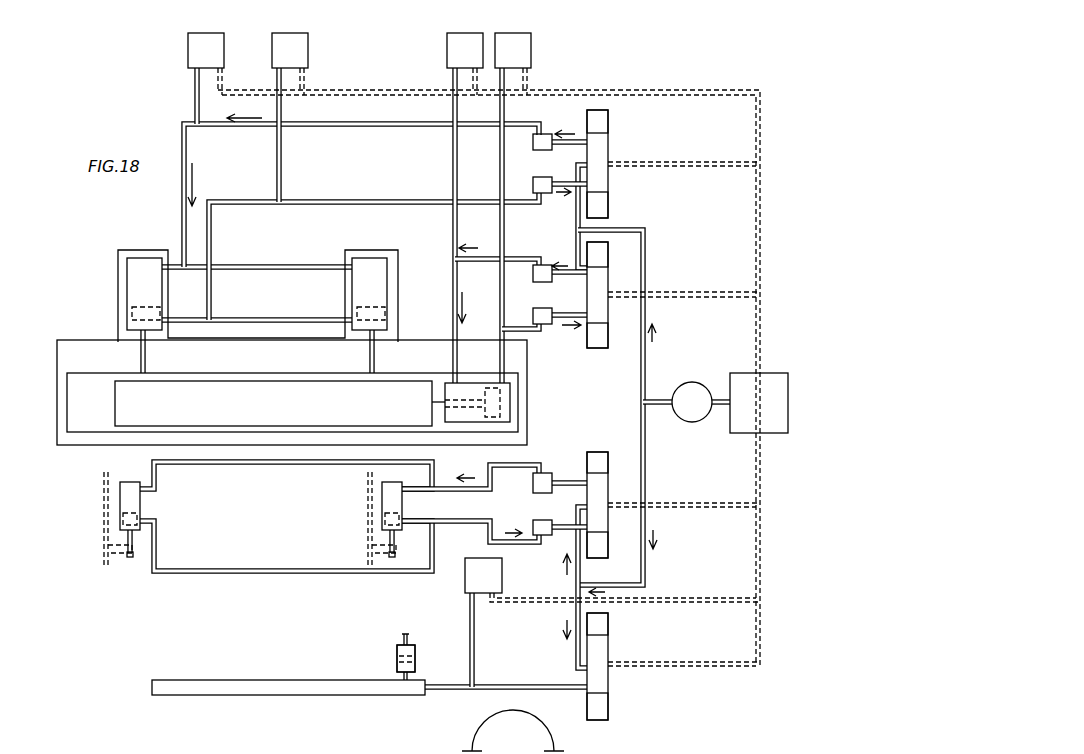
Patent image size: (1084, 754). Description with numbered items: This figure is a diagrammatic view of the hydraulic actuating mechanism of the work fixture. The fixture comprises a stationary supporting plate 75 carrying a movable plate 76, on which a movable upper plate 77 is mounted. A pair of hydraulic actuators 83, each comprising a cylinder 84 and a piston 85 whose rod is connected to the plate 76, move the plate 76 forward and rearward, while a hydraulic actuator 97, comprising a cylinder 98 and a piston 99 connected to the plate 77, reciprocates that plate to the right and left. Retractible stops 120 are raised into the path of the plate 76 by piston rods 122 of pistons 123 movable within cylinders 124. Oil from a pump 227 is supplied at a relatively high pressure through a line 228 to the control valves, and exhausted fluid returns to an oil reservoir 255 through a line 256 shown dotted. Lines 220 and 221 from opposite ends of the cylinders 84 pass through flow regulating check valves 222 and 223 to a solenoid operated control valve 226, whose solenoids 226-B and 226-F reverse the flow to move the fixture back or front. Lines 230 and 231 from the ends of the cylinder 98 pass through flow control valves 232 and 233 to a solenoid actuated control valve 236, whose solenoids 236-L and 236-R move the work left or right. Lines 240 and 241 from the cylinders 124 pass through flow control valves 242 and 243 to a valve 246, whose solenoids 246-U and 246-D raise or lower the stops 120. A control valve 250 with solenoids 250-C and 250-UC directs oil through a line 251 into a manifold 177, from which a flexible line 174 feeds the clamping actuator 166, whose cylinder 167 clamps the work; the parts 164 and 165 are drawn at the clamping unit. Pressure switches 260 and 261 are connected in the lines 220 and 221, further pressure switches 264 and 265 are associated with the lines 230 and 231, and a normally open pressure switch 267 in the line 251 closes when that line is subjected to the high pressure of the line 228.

The supporting plate 75 is at (60, 345).
The movable plate 76 is at (74, 410).
The movable upper plate 77 is at (232, 384).
The hydraulic actuator 83 is at (139, 250).
The cylinder 84 is at (132, 284).
The piston 85 is at (128, 320).
The hydraulic actuator 97 is at (516, 389).
The cylinder 98 is at (512, 423).
The piston 99 is at (500, 410).
The retractible stop 120 is at (104, 480).
The piston rod 122 is at (130, 543).
The piston 123 is at (124, 517).
The cylinder 124 is at (118, 500).
The upper stem 164 is at (414, 632).
The switch contact 165 is at (397, 660).
The hydraulic actuator 166 is at (422, 656).
The cylinder 167 is at (397, 652).
The flexible line 174 is at (404, 676).
The manifold 177 is at (305, 690).
The line 220 is at (393, 127).
The line 221 is at (380, 200).
The flow regulating check valve 222 is at (545, 133).
The flow regulating check valve 223 is at (545, 194).
The solenoid operated control valve 226 is at (608, 150).
The solenoid 226-B is at (608, 124).
The solenoid 226-F is at (608, 209).
The pump 227 is at (688, 386).
The line 228 is at (648, 262).
The line 230 is at (480, 262).
The line 231 is at (500, 348).
The flow control valve 232 is at (535, 281).
The flow control valve 233 is at (543, 325).
The solenoid actuated control valve 236 is at (608, 284).
The solenoid 236-L is at (608, 249).
The solenoid 236-R is at (608, 331).
The line 240 is at (160, 487).
The line 241 is at (218, 571).
The flow control valve 242 is at (535, 481).
The flow control valve 243 is at (535, 528).
The solenoid actuated valve 246 is at (608, 488).
The solenoid 246-U is at (600, 456).
The solenoid 246-D is at (606, 558).
The solenoid actuated control valve 250 is at (608, 691).
The solenoid 250-C is at (608, 625).
The solenoid 250-UC is at (608, 718).
The line 251 is at (535, 672).
The oil reservoir 255 is at (759, 403).
The line 256 is at (672, 168).
The pressure switch 260 is at (224, 60).
The pressure switch 261 is at (272, 63).
The pressure switch PS-R 264 is at (450, 68).
The pressure switch PS-L 265 is at (531, 63).
The pressure switch 267 is at (465, 576).